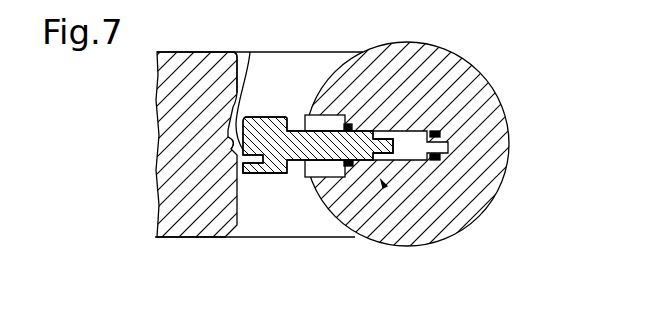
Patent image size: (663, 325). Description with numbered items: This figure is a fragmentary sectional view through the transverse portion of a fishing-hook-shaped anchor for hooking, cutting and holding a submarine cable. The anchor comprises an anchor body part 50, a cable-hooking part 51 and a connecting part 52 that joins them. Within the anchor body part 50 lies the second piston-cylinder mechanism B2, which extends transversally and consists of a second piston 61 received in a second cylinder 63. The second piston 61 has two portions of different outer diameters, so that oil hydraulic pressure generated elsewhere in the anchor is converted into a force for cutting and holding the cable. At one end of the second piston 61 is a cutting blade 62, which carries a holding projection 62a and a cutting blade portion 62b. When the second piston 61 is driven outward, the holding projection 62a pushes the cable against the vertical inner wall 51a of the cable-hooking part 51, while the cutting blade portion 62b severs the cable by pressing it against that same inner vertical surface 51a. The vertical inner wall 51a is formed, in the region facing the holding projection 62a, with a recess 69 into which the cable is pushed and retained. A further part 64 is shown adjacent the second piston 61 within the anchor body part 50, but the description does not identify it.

The anchor body part 50 is at (468, 72).
The cable-hooking part 51 is at (180, 138).
The vertical inner wall 51a is at (233, 52).
The connecting part 52 is at (285, 75).
The second piston 61 is at (363, 131).
The cutting blade 62 is at (275, 150).
The holding projection 62a is at (250, 52).
The cutting blade portion 62b is at (247, 173).
The second cylinder 63 is at (410, 150).
The seal 64 is at (322, 120).
The recess 69 is at (228, 142).
The second piston-cylinder mechanism B2 is at (381, 180).